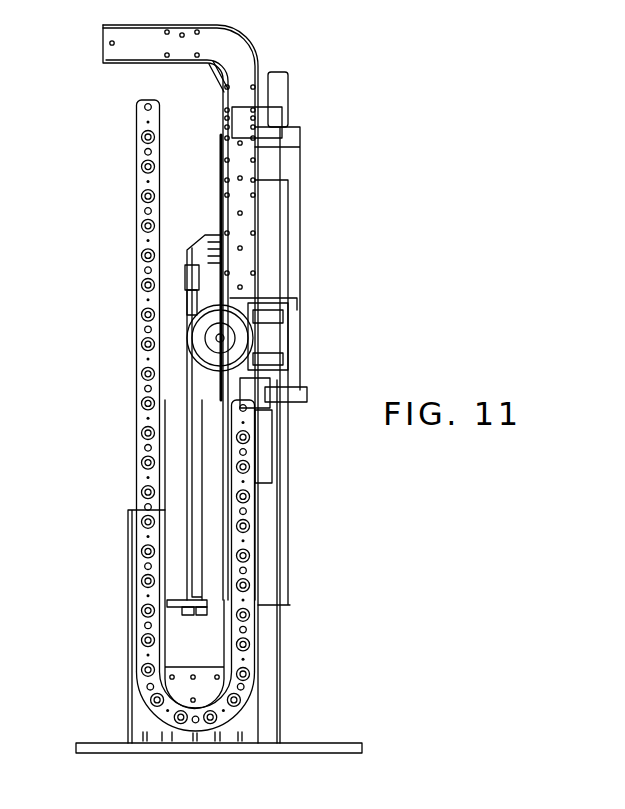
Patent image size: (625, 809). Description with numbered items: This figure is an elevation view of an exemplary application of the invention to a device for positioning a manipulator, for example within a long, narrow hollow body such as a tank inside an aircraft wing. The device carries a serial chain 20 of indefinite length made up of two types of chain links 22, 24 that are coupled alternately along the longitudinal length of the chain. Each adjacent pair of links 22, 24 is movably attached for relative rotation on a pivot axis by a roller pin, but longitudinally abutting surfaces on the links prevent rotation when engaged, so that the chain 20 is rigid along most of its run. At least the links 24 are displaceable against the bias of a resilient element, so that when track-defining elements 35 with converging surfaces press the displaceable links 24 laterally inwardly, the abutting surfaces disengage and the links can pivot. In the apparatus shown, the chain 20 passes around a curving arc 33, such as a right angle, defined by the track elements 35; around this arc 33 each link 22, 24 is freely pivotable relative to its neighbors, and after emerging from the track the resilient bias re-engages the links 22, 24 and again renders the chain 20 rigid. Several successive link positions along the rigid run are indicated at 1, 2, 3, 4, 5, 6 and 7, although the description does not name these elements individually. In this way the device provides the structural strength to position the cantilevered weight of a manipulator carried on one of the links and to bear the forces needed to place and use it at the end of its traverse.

The chain 1 is at (128, 547).
The link 2 is at (133, 223).
The link 3 is at (133, 277).
The link 4 is at (133, 330).
The link 5 is at (133, 392).
The link 6 is at (133, 454).
The link 7 is at (133, 503).
The chain 20 is at (158, 125).
The chain link of the first type 22 is at (143, 123).
The chain link of the second type 24 is at (136, 150).
The curving arc 33 is at (233, 53).
The track-defining elements 35 is at (257, 718).